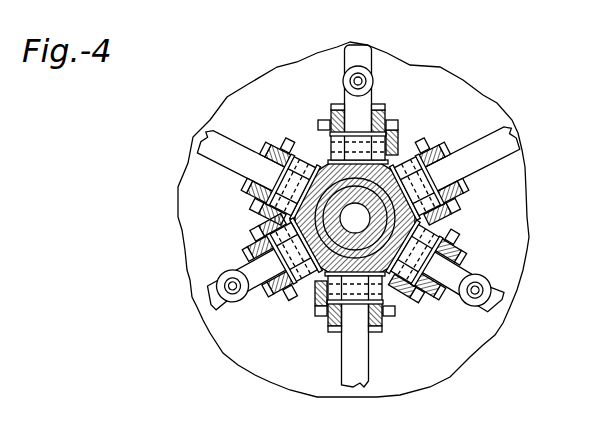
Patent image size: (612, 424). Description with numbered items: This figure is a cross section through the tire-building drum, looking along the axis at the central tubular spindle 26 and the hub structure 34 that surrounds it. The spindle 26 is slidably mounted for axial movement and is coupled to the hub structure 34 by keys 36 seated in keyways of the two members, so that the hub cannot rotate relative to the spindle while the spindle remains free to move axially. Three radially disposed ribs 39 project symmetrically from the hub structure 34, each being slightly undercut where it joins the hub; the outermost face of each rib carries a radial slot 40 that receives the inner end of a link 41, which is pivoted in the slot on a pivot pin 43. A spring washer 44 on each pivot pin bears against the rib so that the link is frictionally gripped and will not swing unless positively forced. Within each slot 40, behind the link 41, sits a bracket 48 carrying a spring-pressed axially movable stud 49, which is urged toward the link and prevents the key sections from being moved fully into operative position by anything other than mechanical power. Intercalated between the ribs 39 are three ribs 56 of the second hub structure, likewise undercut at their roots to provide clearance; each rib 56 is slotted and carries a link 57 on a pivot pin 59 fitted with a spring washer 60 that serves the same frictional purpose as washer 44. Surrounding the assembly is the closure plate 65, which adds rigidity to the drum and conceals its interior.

The tubular spindle 26 is at (442, 220).
The hub structure 34 is at (318, 299).
The keys 36 is at (405, 165).
The ribs 39 is at (322, 160).
The slot 40 is at (347, 128).
The link 41 is at (370, 56).
The pivot pins 43 is at (400, 140).
The spring washers 44 is at (399, 132).
The bracket 48 is at (350, 92).
The stud 49 is at (360, 78).
The ribs 56 is at (287, 150).
The link 57 is at (205, 133).
The pivot pins 59 is at (275, 183).
The spring washers 60 is at (285, 160).
The closure plate 65 is at (453, 93).